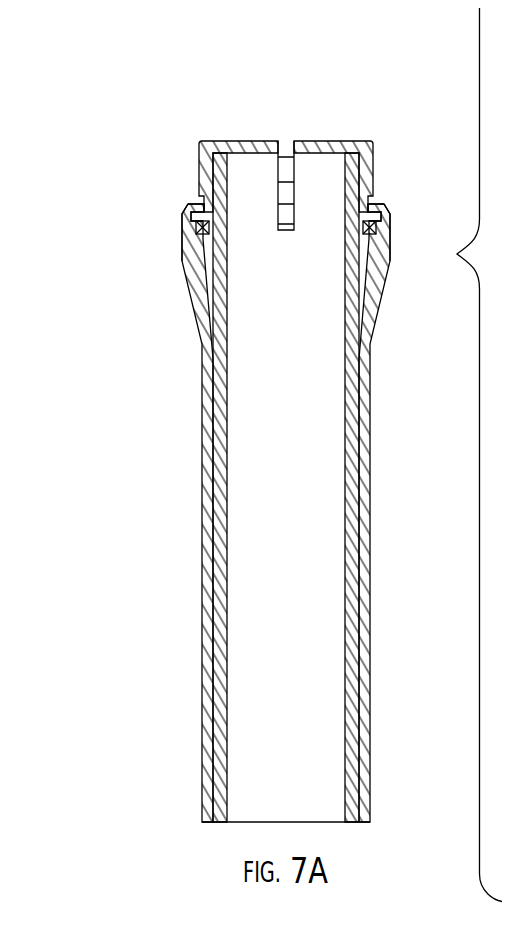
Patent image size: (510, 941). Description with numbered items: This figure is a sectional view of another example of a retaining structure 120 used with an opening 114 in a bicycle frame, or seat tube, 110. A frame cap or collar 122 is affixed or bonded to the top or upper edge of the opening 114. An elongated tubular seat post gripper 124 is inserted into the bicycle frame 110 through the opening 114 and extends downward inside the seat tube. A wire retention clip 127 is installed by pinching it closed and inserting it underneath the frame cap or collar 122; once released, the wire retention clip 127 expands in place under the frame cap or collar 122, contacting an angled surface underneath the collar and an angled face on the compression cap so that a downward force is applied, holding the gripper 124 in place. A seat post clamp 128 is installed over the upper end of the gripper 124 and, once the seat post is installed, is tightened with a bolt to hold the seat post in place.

The bicycle frame (seat tube) 110 is at (223, 753).
The opening 114 is at (155, 177).
The retaining structure 120 is at (250, 83).
The frame cap or collar 122 is at (183, 208).
The elongated tubular seat post gripper 124 is at (362, 706).
The wire retention clip 127 is at (384, 204).
The seat post clamp 128 is at (208, 143).